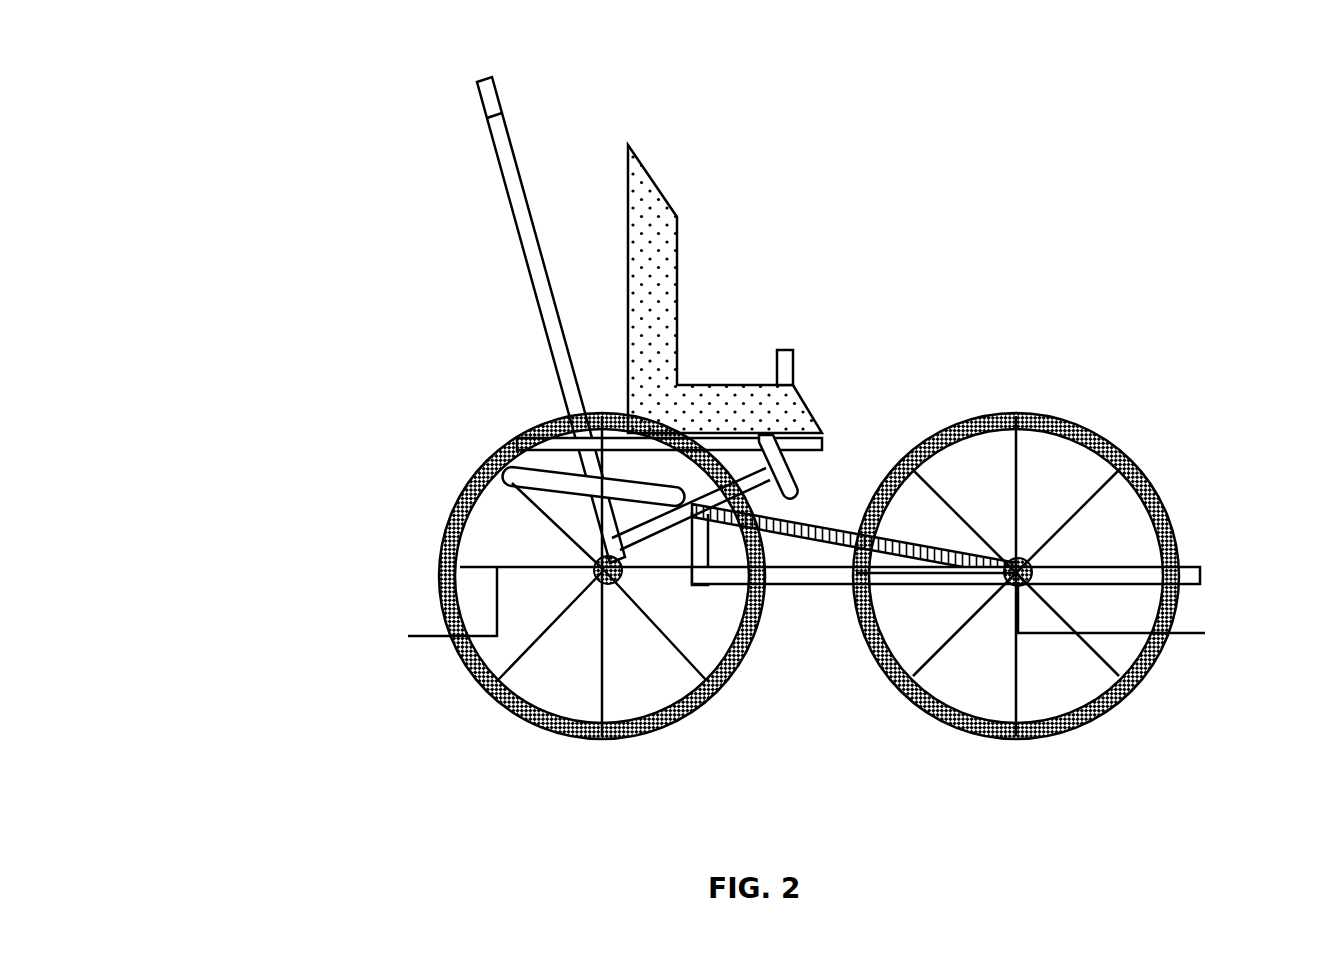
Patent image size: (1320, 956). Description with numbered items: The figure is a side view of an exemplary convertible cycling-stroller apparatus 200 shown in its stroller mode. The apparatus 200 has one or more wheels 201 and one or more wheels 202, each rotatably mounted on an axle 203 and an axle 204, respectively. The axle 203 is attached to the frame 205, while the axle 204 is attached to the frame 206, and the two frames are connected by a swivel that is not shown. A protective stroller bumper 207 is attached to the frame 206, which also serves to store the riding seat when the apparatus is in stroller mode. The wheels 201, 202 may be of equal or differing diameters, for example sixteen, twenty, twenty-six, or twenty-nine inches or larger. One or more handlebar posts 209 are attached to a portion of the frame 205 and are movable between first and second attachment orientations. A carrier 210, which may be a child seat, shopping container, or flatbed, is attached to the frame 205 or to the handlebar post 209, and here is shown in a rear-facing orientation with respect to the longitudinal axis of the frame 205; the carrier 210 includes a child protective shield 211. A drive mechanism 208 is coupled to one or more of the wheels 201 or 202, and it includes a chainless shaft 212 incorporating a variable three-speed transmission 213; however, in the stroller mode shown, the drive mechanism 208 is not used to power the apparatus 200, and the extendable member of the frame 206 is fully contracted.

The convertible cycling-stroller apparatus 200 is at (268, 75).
The wheel 201 is at (467, 673).
The wheel 202 is at (1135, 673).
The axle 203 is at (428, 612).
The axle 204 is at (1149, 618).
The frame 205 is at (828, 442).
The frame 206 is at (823, 507).
The protective stroller bumper 207 is at (1200, 569).
The drive mechanism 208 is at (808, 558).
The handlebar post 209 is at (488, 148).
The carrier 210 is at (662, 190).
The child protective shield 211 is at (793, 350).
The chainless shaft 212 is at (818, 528).
The variable three-speed transmission 213 is at (1018, 572).